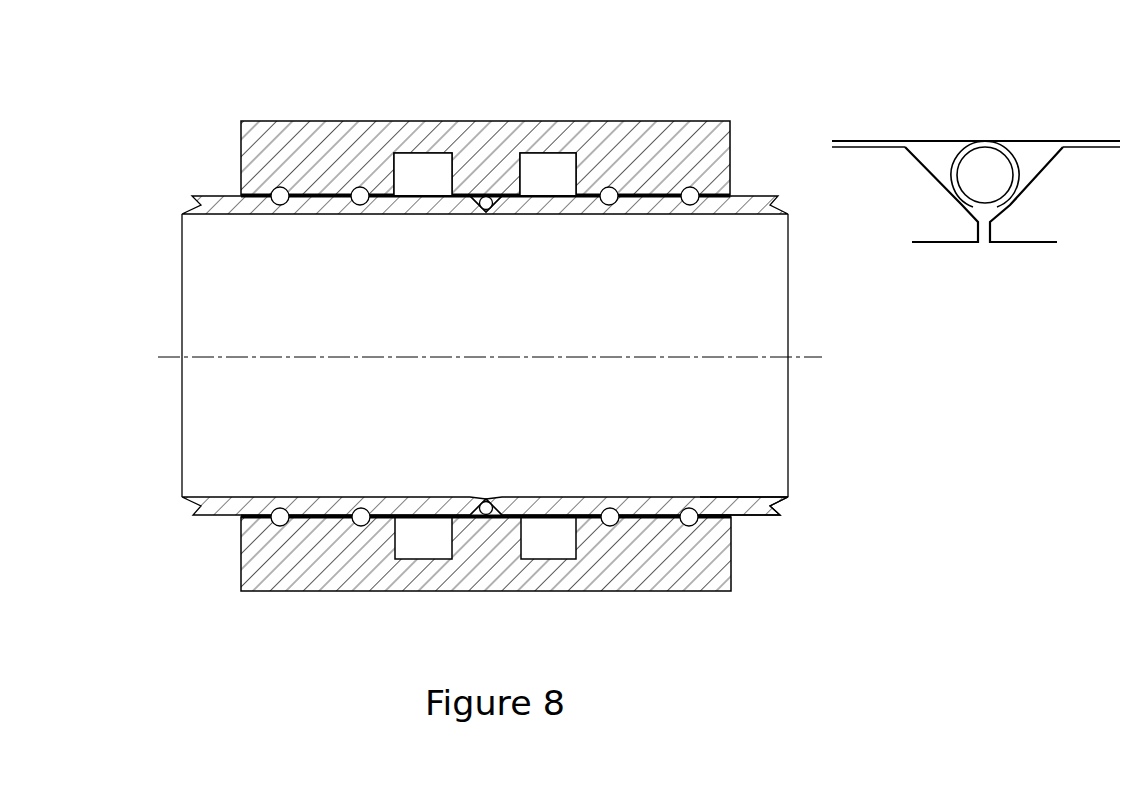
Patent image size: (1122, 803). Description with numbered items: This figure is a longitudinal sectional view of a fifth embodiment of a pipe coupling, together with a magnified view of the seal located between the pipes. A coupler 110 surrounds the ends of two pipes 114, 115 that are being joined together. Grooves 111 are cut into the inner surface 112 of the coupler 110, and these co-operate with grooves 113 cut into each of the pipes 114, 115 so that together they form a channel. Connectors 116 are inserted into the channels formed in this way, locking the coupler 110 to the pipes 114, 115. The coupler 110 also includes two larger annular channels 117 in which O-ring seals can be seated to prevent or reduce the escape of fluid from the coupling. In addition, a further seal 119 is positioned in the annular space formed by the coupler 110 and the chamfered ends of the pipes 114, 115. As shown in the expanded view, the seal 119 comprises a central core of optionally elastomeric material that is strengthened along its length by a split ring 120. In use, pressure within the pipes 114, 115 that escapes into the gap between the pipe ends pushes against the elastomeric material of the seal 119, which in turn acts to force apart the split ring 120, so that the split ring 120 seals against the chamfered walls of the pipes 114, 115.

The coupler 110 is at (240, 128).
The grooves 111 is at (690, 187).
The inner surface 112 is at (736, 197).
The grooves 113 is at (362, 526).
The pipe 114 is at (211, 517).
The pipe 115 is at (762, 518).
The connectors 116 is at (279, 188).
The annular channels 117 is at (414, 164).
The further seal 119 is at (486, 194).
The split ring 120 is at (997, 143).